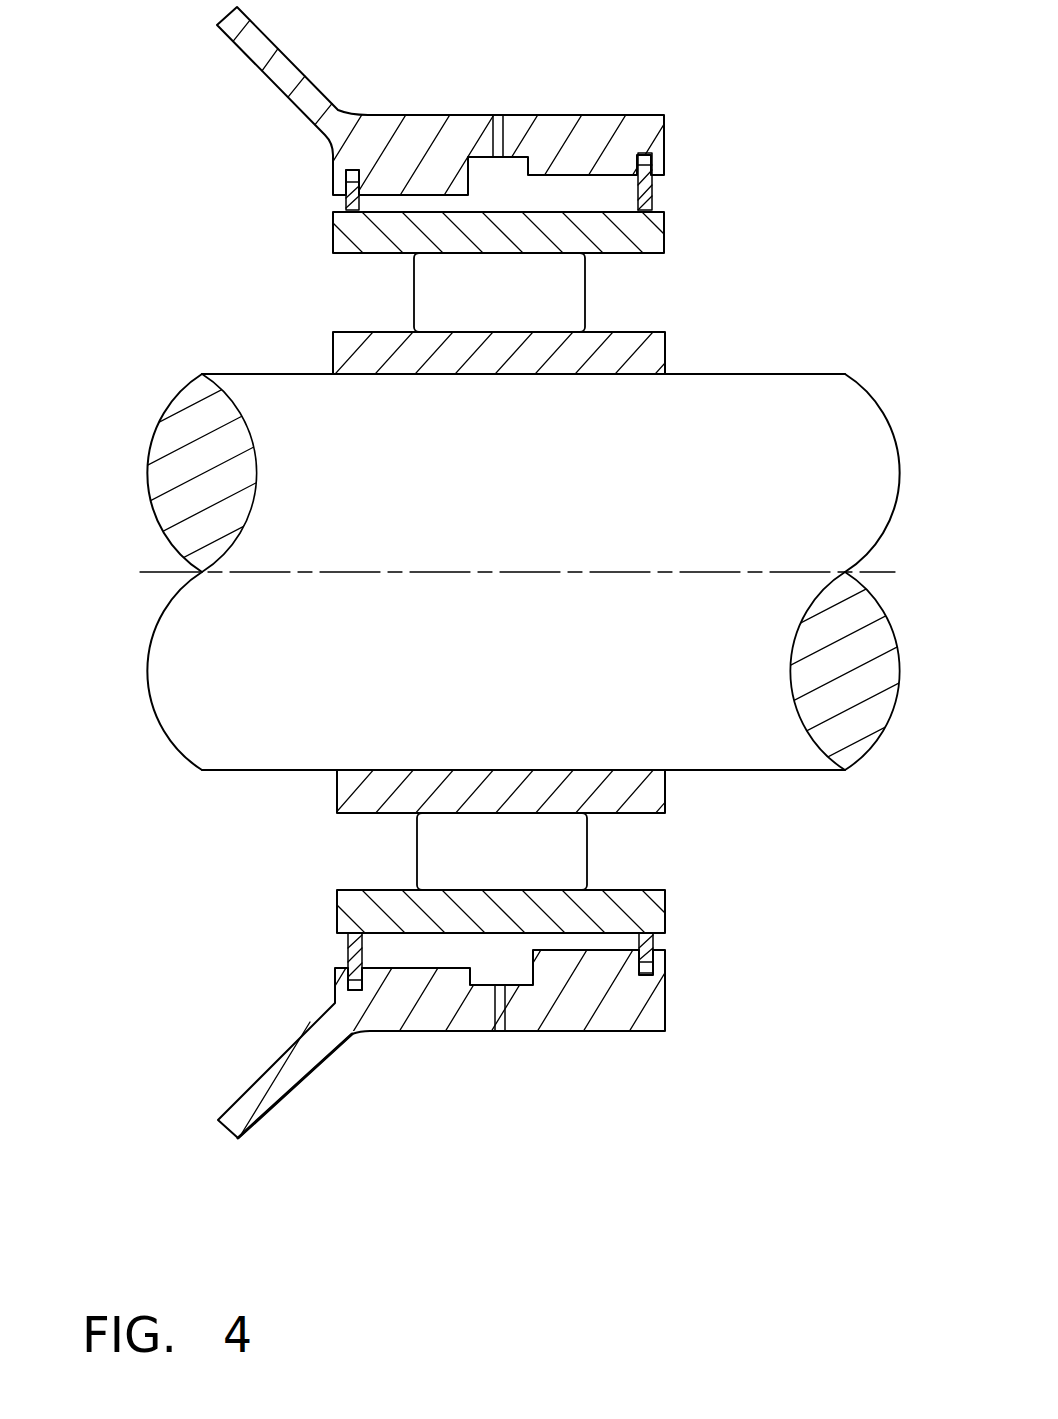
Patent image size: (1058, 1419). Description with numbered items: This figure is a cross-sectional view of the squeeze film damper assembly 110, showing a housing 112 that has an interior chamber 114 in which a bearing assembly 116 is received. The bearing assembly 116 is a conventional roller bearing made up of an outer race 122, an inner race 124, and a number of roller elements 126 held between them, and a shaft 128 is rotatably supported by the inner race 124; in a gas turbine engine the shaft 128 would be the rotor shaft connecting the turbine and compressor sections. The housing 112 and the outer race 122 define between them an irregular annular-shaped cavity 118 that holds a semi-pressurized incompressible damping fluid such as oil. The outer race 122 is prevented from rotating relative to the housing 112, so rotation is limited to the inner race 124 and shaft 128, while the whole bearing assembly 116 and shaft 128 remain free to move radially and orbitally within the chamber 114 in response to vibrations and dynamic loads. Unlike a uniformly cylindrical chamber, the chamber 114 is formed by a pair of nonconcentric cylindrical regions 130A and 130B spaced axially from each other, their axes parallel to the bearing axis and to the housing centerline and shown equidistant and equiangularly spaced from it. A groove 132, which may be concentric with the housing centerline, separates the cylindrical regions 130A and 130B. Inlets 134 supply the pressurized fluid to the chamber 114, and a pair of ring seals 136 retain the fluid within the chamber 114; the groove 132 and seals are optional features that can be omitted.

The squeeze film damper assembly 110 is at (436, 572).
The housing 112 is at (475, 572).
The interior chamber 114 is at (495, 573).
The bearing assembly 116 is at (519, 533).
The cavity 118 is at (583, 192).
The outer race 122 is at (650, 243).
The inner race 124 is at (648, 346).
The roller elements 126 is at (455, 303).
The shaft 128 is at (809, 405).
The cylindrical region 130A is at (382, 193).
The cylindrical region 130B is at (612, 178).
The groove 132 is at (483, 162).
The inlets 134 is at (502, 127).
The ring seals 136 is at (343, 202).